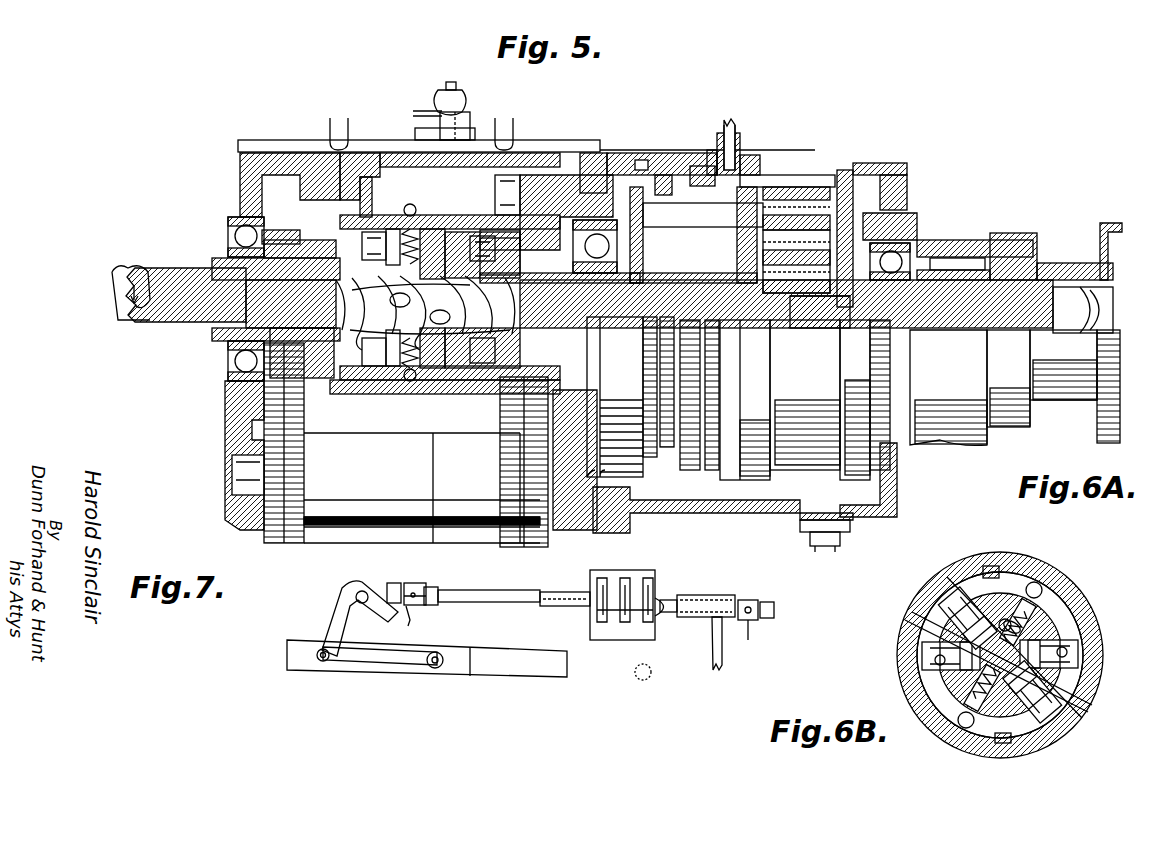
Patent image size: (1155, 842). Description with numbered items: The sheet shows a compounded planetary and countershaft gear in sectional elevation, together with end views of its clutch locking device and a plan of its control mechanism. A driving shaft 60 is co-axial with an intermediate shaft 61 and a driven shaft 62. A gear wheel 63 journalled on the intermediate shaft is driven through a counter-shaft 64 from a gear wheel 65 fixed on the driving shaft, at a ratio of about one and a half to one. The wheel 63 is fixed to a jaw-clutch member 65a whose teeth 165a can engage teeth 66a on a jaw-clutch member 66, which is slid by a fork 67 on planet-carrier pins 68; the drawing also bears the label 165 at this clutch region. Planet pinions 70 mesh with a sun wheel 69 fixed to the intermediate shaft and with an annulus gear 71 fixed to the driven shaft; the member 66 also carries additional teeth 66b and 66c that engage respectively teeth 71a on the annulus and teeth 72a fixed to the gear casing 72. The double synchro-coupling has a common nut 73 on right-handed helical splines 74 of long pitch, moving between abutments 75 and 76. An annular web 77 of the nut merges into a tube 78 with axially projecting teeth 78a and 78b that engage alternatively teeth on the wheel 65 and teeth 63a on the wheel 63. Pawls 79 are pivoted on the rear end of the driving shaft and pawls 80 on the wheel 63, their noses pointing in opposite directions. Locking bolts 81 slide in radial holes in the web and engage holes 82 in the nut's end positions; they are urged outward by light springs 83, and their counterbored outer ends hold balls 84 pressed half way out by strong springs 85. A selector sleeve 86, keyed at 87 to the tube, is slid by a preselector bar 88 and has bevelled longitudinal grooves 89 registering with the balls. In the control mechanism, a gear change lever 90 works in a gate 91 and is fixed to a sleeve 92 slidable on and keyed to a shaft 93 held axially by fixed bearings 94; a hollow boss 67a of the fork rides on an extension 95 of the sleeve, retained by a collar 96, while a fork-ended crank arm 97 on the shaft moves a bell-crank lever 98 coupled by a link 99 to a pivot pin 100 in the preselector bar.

In FIG. 5, the driving shaft 60 is at (165, 275).
In FIG. 5, the intermediate shaft 61 is at (597, 333).
In FIG. 5, the driven shaft 62 is at (1070, 312).
In FIG. 5, the gear wheel 63 is at (528, 228).
In FIG. 5, the teeth 63a is at (508, 220).
In FIG. 5, the counter-shaft 64 is at (305, 528).
In FIG. 5, the gear wheel 65 is at (228, 222).
In FIG. 5, the jaw-clutch member 65a is at (326, 230).
In FIG. 5, the jaw-clutch member 66 is at (716, 165).
In FIG. 5, the teeth 66a is at (697, 168).
In FIG. 5, the additional teeth 66b is at (795, 187).
In FIG. 5, the additional teeth 66c is at (750, 156).
In FIG. 5, the fork 67 is at (732, 125).
In FIG. 7, the fork 67 is at (712, 658).
In FIG. 7, the hollow boss 67a is at (730, 600).
In FIG. 5, the planet-carrier pins 68 is at (703, 215).
In FIG. 5, the sun wheel 69 is at (812, 305).
In FIG. 5, the planet pinions 70 is at (800, 250).
In FIG. 5, the annulus gear 71 is at (845, 180).
In FIG. 5, the teeth 71a is at (775, 177).
In FIG. 5, the gear casing 72 is at (592, 152).
In FIG. 5, the teeth 72a is at (642, 160).
In FIG. 5, the common nut 73 is at (290, 360).
In FIG. 5, the helical splines 74 is at (260, 318).
In FIG. 5, the abutment 75 is at (230, 262).
In FIG. 5, the abutment 76 is at (505, 225).
In FIG. 5, the annular web 77 is at (380, 392).
In FIG. 5, the tube 78 is at (375, 140).
In FIG. 5, the teeth 78a is at (330, 190).
In FIG. 5, the teeth 78b is at (503, 145).
In FIG. 5, the pawls 79 is at (366, 176).
In FIG. 5, the pawls 80 is at (470, 170).
In FIG. 5, the bolts 81 is at (482, 365).
In FIG. 6B, the bolts 81 is at (920, 660).
In FIG. 5, the holes 82 is at (396, 303).
In FIG. 6B, the holes 82 is at (1020, 627).
In FIG. 5, the light springs 83 is at (385, 382).
In FIG. 6B, the light springs 83 is at (935, 612).
In FIG. 5, the balls 84 is at (408, 205).
In FIG. 6B, the balls 84 is at (1035, 580).
In FIG. 5, the strong springs 85 is at (428, 372).
In FIG. 6B, the strong springs 85 is at (1068, 615).
In FIG. 5, the selector sleeve 86 is at (393, 380).
In FIG. 6B, the selector sleeve 86 is at (955, 578).
In FIG. 6B, the key 87 is at (991, 566).
In FIG. 5, the preselector bar 88 is at (396, 146).
In FIG. 7, the preselector bar 88 is at (516, 660).
In FIG. 5, the longitudinal grooves 89 is at (470, 372).
In FIG. 6B, the longitudinal grooves 89 is at (1036, 582).
In FIG. 7, the gear change lever 90 is at (665, 615).
In FIG. 5, the gate 91 is at (618, 562).
In FIG. 7, the gate 91 is at (618, 580).
In FIG. 7, the sleeve 92 is at (553, 592).
In FIG. 7, the shaft 93 is at (480, 590).
In FIG. 7, the fixed bearings 94 is at (395, 583).
In FIG. 7, the extension 95 is at (692, 595).
In FIG. 7, the collar 96 is at (735, 640).
In FIG. 7, the fork-ended crank arm 97 is at (420, 608).
In FIG. 7, the bell-crank lever 98 is at (340, 620).
In FIG. 5, the link 99 is at (422, 110).
In FIG. 7, the link 99 is at (370, 653).
In FIG. 5, the pivot pin 100 is at (456, 90).
In FIG. 7, the pivot pin 100 is at (440, 654).
In FIG. 5, the stop 165 is at (664, 175).
In FIG. 5, the teeth 165a is at (672, 200).